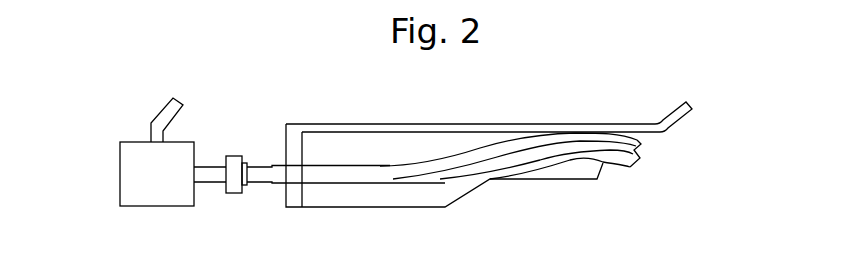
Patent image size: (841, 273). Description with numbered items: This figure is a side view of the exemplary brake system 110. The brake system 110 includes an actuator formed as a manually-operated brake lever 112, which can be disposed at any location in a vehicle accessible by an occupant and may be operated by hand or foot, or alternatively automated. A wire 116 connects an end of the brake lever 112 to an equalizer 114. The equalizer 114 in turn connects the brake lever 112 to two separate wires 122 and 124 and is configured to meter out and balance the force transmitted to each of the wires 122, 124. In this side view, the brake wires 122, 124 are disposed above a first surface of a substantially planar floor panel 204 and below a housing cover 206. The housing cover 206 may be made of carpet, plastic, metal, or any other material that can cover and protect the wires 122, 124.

The brake system 110 is at (104, 174).
The brake lever 112 is at (173, 180).
The equalizer 114 is at (235, 186).
The wire 116 is at (210, 177).
The wire 122 is at (515, 168).
The wire 124 is at (388, 173).
The floor panel 204 is at (577, 179).
The housing cover 206 is at (677, 120).